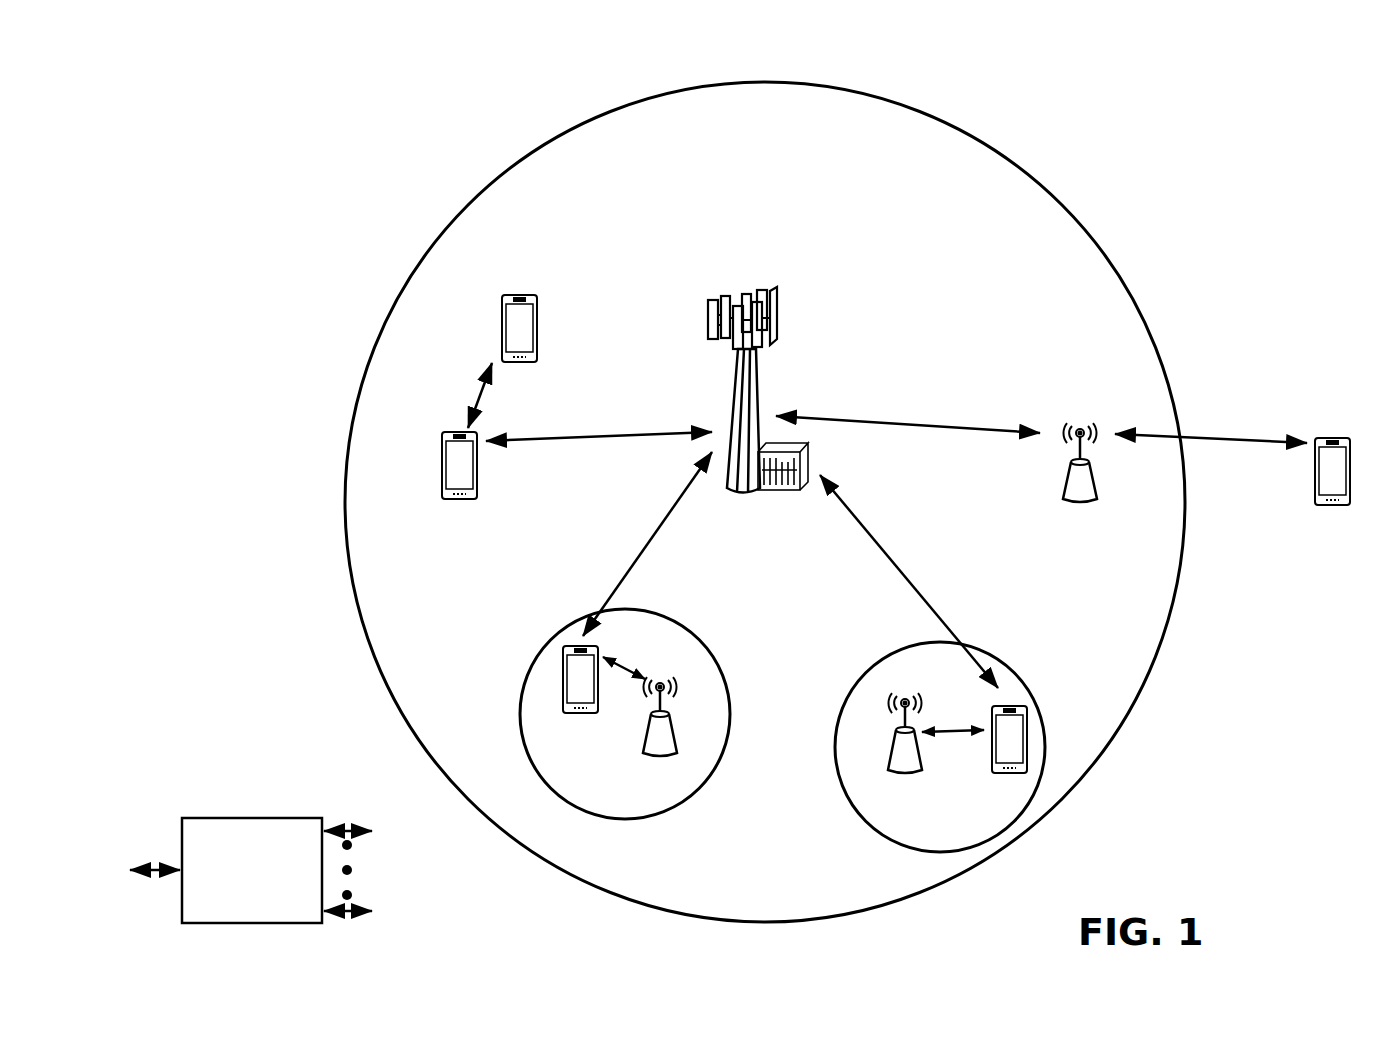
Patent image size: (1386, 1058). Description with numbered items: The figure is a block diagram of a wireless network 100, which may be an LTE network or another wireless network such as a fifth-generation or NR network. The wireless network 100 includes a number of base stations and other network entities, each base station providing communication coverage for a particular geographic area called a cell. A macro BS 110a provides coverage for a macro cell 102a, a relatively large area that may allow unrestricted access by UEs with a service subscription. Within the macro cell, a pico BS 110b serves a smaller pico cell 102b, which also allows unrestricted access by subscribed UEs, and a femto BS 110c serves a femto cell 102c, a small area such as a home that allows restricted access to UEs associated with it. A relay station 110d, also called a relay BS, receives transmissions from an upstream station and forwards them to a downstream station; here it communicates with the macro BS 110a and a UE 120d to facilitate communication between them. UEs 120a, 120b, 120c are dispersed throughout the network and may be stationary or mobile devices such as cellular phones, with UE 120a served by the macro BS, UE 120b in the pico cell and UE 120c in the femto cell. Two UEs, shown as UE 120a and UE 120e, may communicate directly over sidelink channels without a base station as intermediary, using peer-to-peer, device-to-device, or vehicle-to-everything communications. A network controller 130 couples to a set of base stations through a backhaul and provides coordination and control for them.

The wireless network 100 is at (230, 77).
The macro cell 102a is at (1045, 185).
The pico cell 102b is at (712, 650).
The femto cell 102c is at (876, 662).
The macro BS 110a is at (752, 284).
The pico BS 110b is at (684, 742).
The femto BS 110c is at (886, 760).
The relay station 110d is at (1080, 424).
The UE 120a is at (442, 462).
The UE 120b is at (565, 714).
The UE 120c is at (1000, 775).
The UE 120d is at (1350, 437).
The UE 120e is at (502, 318).
The network controller 130 is at (250, 817).